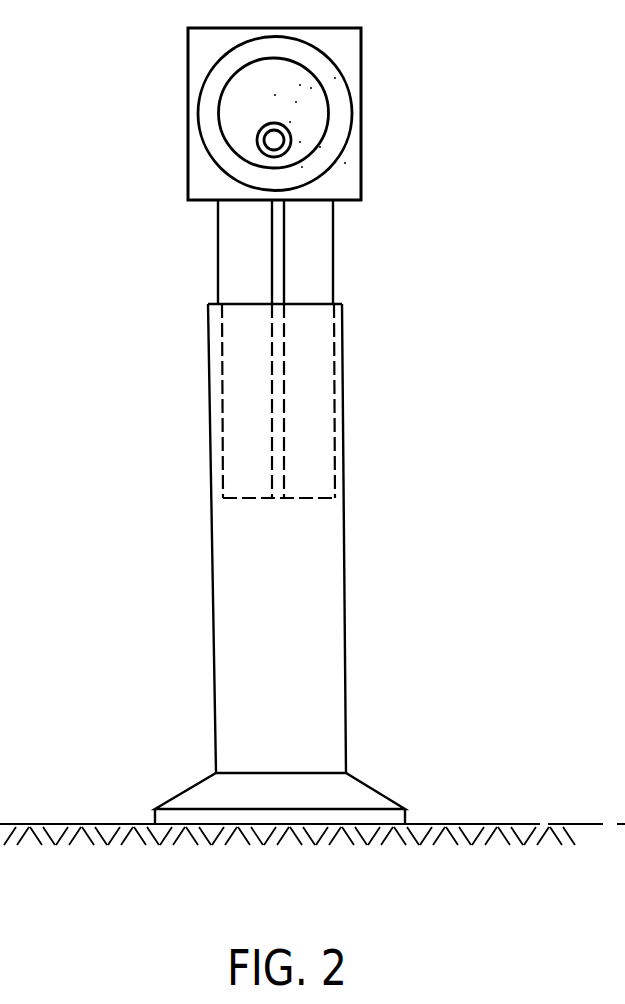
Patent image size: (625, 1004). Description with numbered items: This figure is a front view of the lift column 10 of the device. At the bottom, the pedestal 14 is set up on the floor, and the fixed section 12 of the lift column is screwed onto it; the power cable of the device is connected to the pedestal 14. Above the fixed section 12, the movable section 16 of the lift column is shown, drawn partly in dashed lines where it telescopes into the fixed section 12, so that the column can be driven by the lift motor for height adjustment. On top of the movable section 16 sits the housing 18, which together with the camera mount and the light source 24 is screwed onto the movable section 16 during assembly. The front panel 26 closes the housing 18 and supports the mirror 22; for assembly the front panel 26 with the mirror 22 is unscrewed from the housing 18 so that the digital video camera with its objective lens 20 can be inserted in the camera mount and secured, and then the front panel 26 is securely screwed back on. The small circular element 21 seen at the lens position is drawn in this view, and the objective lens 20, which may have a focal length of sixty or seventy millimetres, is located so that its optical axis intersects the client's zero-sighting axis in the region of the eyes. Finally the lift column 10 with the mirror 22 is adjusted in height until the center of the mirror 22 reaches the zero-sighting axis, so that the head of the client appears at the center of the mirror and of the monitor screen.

The lift column 10 is at (208, 578).
The fixed section 12 is at (318, 637).
The pedestal 14 is at (363, 797).
The movable section 16 is at (316, 262).
The housing 18 is at (368, 172).
The objective lens 20 is at (273, 143).
The hub 21 is at (265, 140).
The mirror 22 is at (242, 106).
The light source 24 is at (218, 80).
The front panel 26 is at (203, 49).